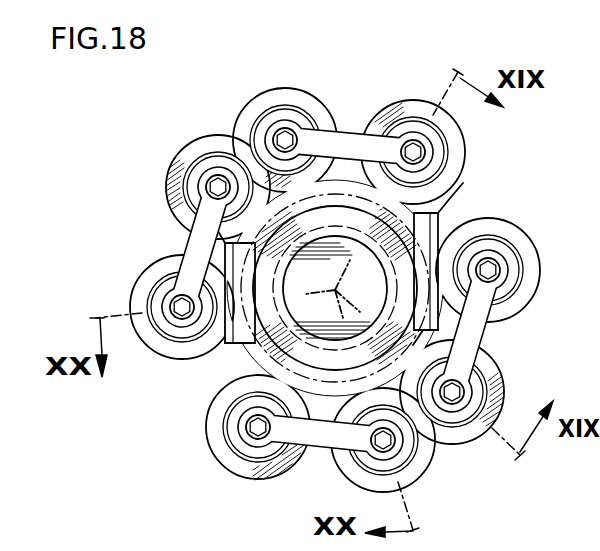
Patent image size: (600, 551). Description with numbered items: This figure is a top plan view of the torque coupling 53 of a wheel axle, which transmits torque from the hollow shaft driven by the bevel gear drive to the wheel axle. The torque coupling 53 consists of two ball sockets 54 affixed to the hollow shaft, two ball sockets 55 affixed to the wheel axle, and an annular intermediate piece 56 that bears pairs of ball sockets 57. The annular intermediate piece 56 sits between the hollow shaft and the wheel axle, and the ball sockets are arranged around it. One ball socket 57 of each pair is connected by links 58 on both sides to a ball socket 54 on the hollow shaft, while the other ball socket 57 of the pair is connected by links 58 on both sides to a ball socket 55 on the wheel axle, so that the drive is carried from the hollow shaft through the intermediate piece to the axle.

The torque coupling 53 is at (490, 190).
The ball sockets affixed to the hollow shaft 54 is at (157, 287).
The ball sockets affixed to the wheel axle 55 is at (403, 122).
The annular intermediate piece 56 is at (243, 355).
The ball sockets 57 is at (257, 142).
The links 58 is at (470, 341).